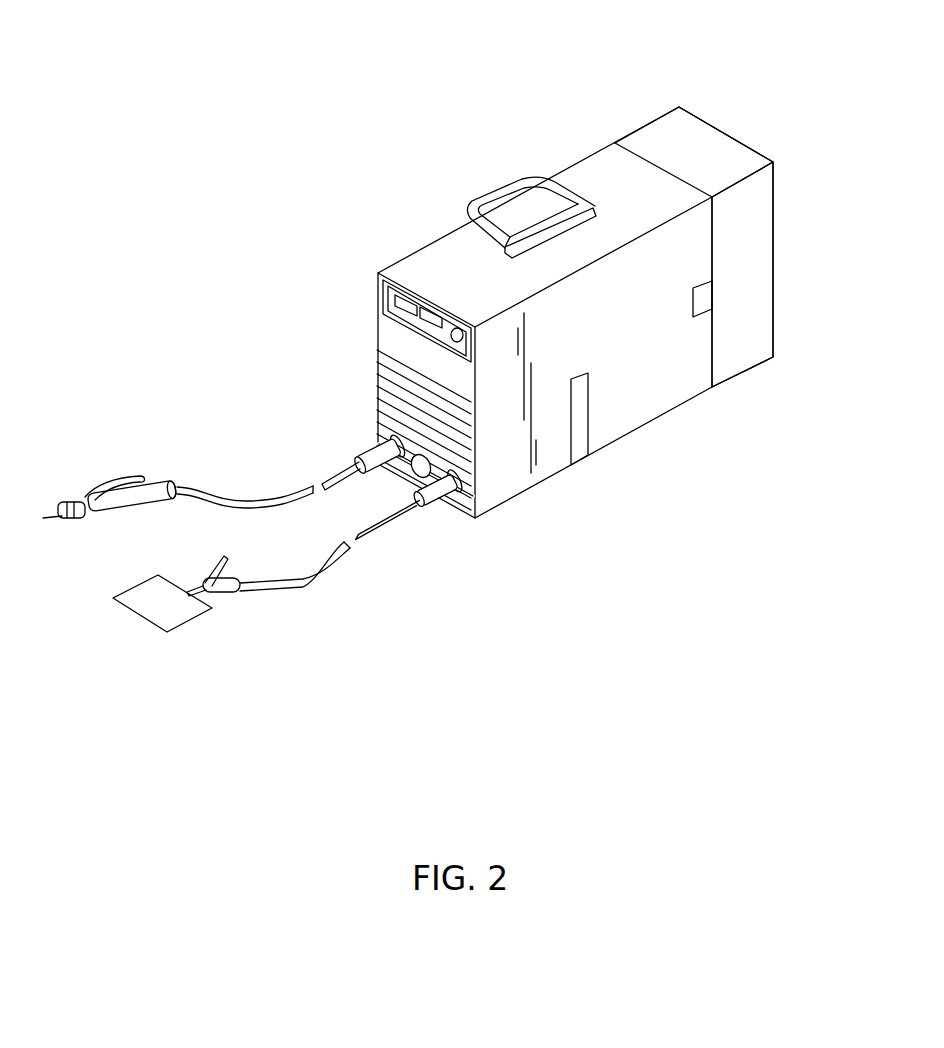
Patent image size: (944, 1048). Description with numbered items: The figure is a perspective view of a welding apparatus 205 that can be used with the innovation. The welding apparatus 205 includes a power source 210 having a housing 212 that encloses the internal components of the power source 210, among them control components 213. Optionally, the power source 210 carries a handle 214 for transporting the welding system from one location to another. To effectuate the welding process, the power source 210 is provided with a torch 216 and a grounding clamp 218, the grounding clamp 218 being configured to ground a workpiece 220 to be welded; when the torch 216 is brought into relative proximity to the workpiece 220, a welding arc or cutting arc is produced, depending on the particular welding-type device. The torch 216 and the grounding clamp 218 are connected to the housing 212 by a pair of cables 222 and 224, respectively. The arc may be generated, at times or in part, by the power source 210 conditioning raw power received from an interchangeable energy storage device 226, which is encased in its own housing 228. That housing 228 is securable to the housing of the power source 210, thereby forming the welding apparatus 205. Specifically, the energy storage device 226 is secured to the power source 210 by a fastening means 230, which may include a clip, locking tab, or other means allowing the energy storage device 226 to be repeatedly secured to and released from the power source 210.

The welding apparatus 205 is at (170, 73).
The power source 210 is at (361, 215).
The housing 212 is at (605, 330).
The control components 213 is at (591, 418).
The handle 214 is at (518, 180).
The torch 216 is at (157, 483).
The grounding clamp 218 is at (220, 558).
The workpiece 220 is at (143, 608).
The cable 222 is at (237, 498).
The cable 224 is at (300, 585).
The interchangeable energy storage device 226 is at (748, 112).
The housing 228 is at (756, 268).
The fastening means 230 is at (692, 302).